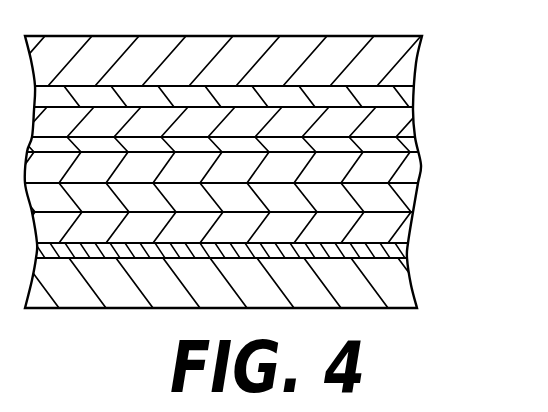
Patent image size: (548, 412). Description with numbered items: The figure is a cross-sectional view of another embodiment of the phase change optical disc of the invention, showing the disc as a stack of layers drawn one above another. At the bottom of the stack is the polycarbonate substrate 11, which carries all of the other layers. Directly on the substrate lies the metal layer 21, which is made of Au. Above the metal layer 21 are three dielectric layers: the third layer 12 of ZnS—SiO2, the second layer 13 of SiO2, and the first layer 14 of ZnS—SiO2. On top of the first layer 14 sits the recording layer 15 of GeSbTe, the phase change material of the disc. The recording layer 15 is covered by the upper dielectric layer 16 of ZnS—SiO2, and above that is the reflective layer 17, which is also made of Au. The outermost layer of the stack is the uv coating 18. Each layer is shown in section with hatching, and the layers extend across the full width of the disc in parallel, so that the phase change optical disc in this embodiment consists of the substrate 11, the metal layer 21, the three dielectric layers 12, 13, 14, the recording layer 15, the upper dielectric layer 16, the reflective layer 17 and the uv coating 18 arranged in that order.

The polycarbonate substrate 11 is at (412, 292).
The metal layer 21 is at (408, 257).
The third layer 12 is at (410, 229).
The second layer 13 is at (413, 193).
The first layer 14 is at (418, 168).
The recording layer 15 is at (415, 143).
The upper dielectric layer 16 is at (415, 127).
The reflective layer 17 is at (415, 92).
The uv coating 18 is at (415, 55).